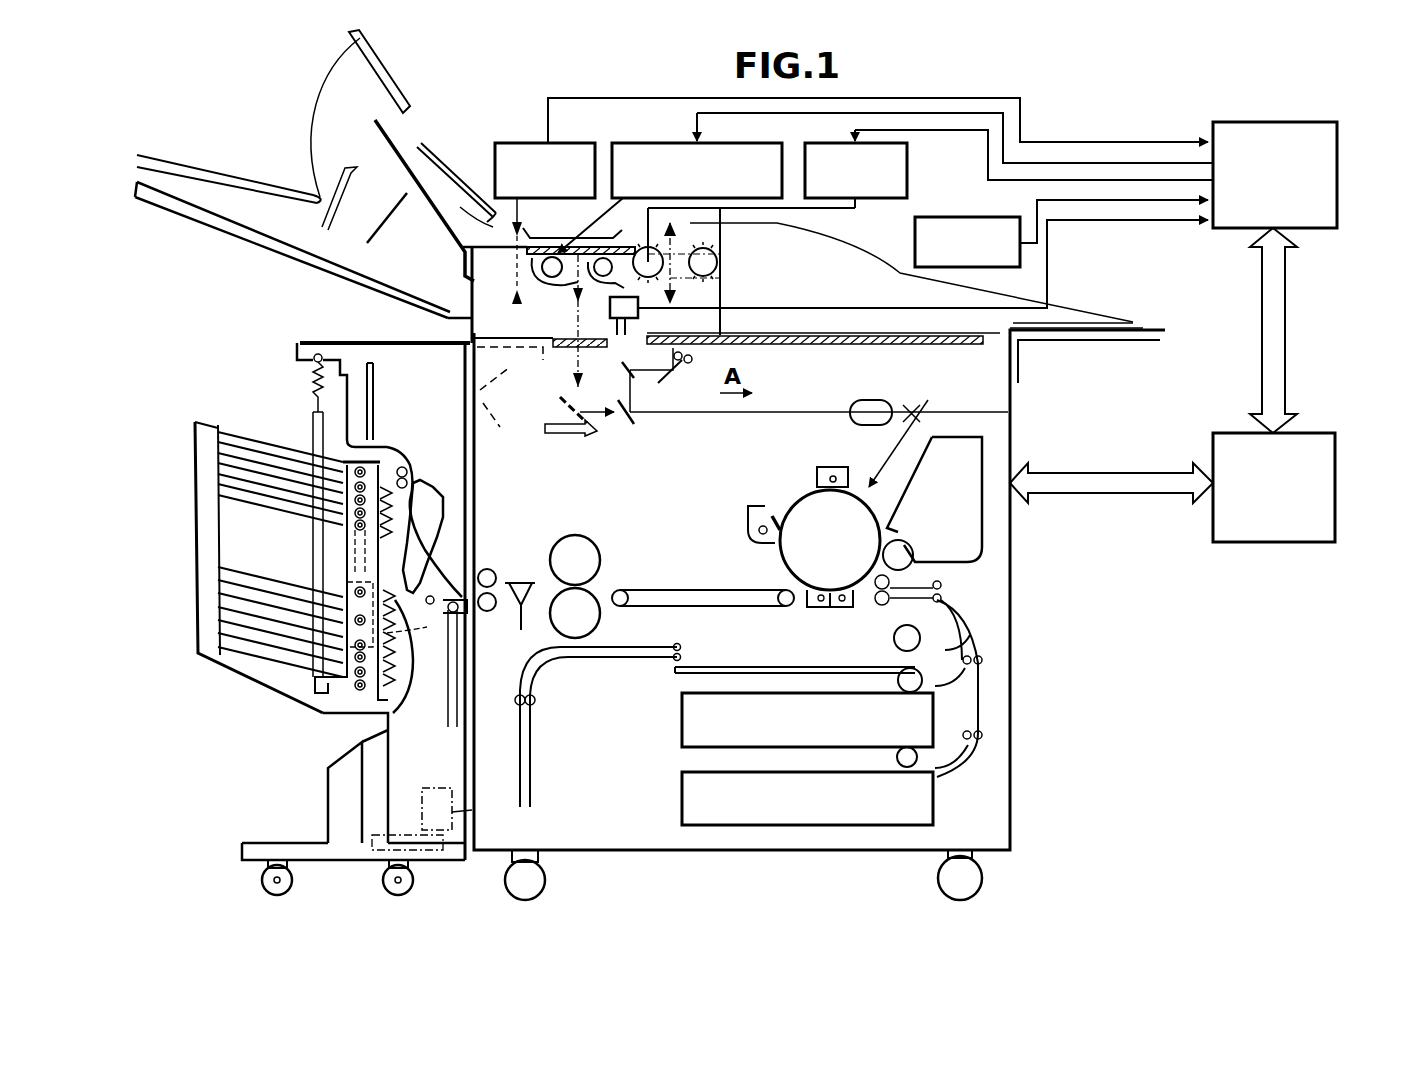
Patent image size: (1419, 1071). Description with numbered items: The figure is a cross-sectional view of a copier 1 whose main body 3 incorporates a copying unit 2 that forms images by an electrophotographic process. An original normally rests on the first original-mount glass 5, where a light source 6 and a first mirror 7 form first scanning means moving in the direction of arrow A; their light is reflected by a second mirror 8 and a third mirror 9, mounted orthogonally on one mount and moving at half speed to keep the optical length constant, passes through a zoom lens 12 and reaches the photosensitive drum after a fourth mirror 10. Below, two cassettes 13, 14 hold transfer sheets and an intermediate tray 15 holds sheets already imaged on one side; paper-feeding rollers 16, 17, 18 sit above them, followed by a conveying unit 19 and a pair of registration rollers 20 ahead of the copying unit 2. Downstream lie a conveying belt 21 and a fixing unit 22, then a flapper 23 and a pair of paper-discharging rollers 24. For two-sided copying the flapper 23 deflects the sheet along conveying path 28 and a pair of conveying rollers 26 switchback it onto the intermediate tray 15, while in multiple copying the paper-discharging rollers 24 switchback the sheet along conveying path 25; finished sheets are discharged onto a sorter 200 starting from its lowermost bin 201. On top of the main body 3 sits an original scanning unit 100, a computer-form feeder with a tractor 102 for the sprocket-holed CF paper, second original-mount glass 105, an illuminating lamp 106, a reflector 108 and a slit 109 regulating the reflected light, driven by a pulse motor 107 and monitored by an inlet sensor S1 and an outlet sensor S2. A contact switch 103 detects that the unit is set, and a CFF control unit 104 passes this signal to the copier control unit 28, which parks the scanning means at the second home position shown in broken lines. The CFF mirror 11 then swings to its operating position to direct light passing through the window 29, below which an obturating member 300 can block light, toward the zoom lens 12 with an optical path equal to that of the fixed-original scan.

The copier 1 is at (1090, 622).
The copying unit 2 is at (794, 492).
The main body of the copier 3 is at (1008, 407).
The first original-mount glass 5 is at (792, 345).
The light source 6 is at (681, 360).
The first mirror 7 is at (670, 383).
The second mirror 8 is at (622, 372).
The third mirror 9 is at (633, 422).
The fourth mirror 10 is at (911, 437).
The CFF mirror 11 is at (563, 433).
The zoom lens 12 is at (884, 400).
The cassette 13 is at (681, 732).
The cassette 14 is at (687, 790).
The intermediate tray 15 is at (676, 668).
The paper-feeding roller 16 is at (905, 690).
The paper-feeding roller 17 is at (902, 765).
The paper-feeding roller 18 is at (893, 638).
The conveying unit 19 is at (943, 598).
The pair of registration rollers 20 is at (892, 600).
The conveying belt 21 is at (731, 607).
The fixing unit 22 is at (598, 556).
The flapper 23 is at (528, 580).
The pair of paper-discharging rollers 24 is at (489, 570).
The conveying path 25 is at (523, 663).
The pair of conveying rollers 26 is at (535, 703).
The copier control unit 28 is at (1275, 542).
The window 29 is at (558, 368).
The original scanning unit 100 is at (486, 201).
The tractor 102 is at (723, 254).
The joint or contact switch 103 is at (545, 414).
The CFF control unit 104 is at (1337, 216).
The second original-mount glass 105 is at (541, 262).
The illuminating lamp 106 is at (652, 142).
The pulse motor 107 is at (907, 170).
The reflector 108 is at (680, 278).
The slit 109 is at (603, 318).
The sorter 200 is at (289, 348).
The lowermost bin 201 is at (290, 648).
The obturating member 300 is at (560, 320).
The inlet sensor S1 is at (915, 243).
The outlet sensor S2 is at (578, 143).